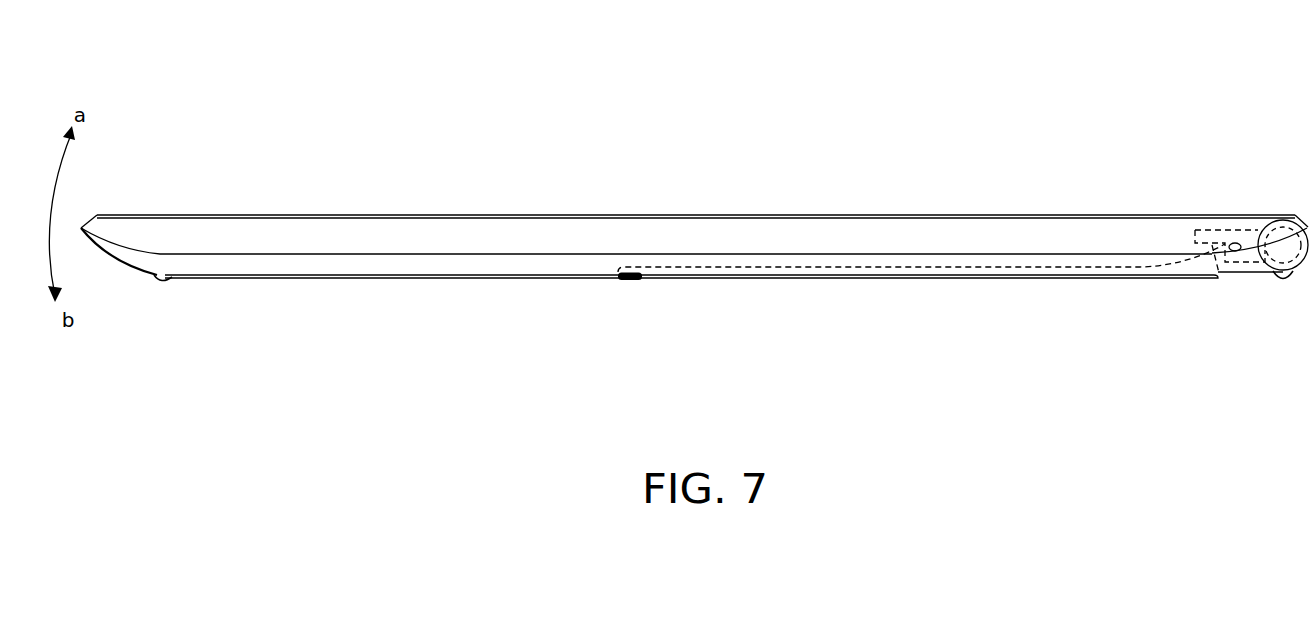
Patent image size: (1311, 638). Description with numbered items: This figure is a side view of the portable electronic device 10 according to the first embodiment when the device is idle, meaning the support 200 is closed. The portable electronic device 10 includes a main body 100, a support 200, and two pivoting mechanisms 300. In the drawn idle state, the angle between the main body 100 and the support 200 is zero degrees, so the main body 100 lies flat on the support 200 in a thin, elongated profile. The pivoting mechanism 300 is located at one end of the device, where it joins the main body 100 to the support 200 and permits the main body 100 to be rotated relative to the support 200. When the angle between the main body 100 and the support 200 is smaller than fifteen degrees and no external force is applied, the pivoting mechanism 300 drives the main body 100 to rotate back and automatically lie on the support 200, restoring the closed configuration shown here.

The portable electronic device 10 is at (244, 38).
The main body 100 is at (741, 222).
The support 200 is at (950, 276).
The pivoting mechanism 300 is at (1244, 213).